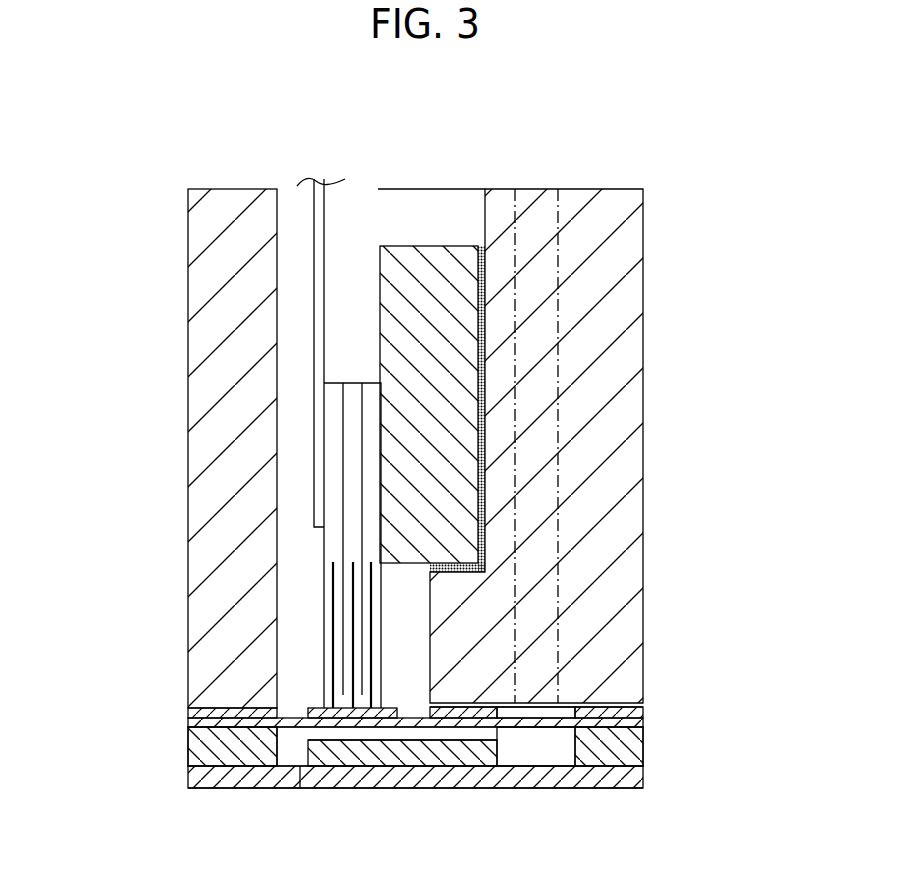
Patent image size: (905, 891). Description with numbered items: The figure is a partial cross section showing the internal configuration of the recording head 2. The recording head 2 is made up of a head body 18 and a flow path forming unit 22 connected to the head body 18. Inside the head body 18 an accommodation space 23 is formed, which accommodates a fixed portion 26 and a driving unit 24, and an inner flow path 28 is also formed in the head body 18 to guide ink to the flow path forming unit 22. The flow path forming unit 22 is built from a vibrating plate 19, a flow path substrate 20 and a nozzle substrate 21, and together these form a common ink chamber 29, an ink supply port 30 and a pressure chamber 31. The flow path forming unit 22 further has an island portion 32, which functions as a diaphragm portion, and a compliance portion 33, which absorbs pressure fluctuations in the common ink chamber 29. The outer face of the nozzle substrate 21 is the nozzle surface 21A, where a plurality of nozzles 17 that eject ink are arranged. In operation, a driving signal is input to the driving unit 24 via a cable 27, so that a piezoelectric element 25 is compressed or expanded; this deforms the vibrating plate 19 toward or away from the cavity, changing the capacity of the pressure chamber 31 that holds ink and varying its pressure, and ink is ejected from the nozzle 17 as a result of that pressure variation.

The recording head 2 is at (429, 479).
The nozzle 17 is at (300, 773).
The head body 18 is at (575, 448).
The vibrating plate 19 is at (640, 723).
The flow path substrate 20 is at (446, 793).
The nozzle substrate 21 is at (408, 808).
The nozzle surface 21A is at (208, 788).
The flow path forming unit 22 is at (429, 783).
The accommodation space 23 is at (295, 378).
The driving unit 24 is at (250, 415).
The piezoelectric element 25 is at (325, 553).
The fixed portion 26 is at (437, 250).
The cable 27 is at (320, 287).
The inner flow path 28 is at (560, 310).
The common ink chamber 29 is at (552, 760).
The ink supply port 30 is at (475, 732).
The pressure chamber 31 is at (385, 750).
The island portion 32 is at (315, 707).
The compliance portion 33 is at (541, 713).